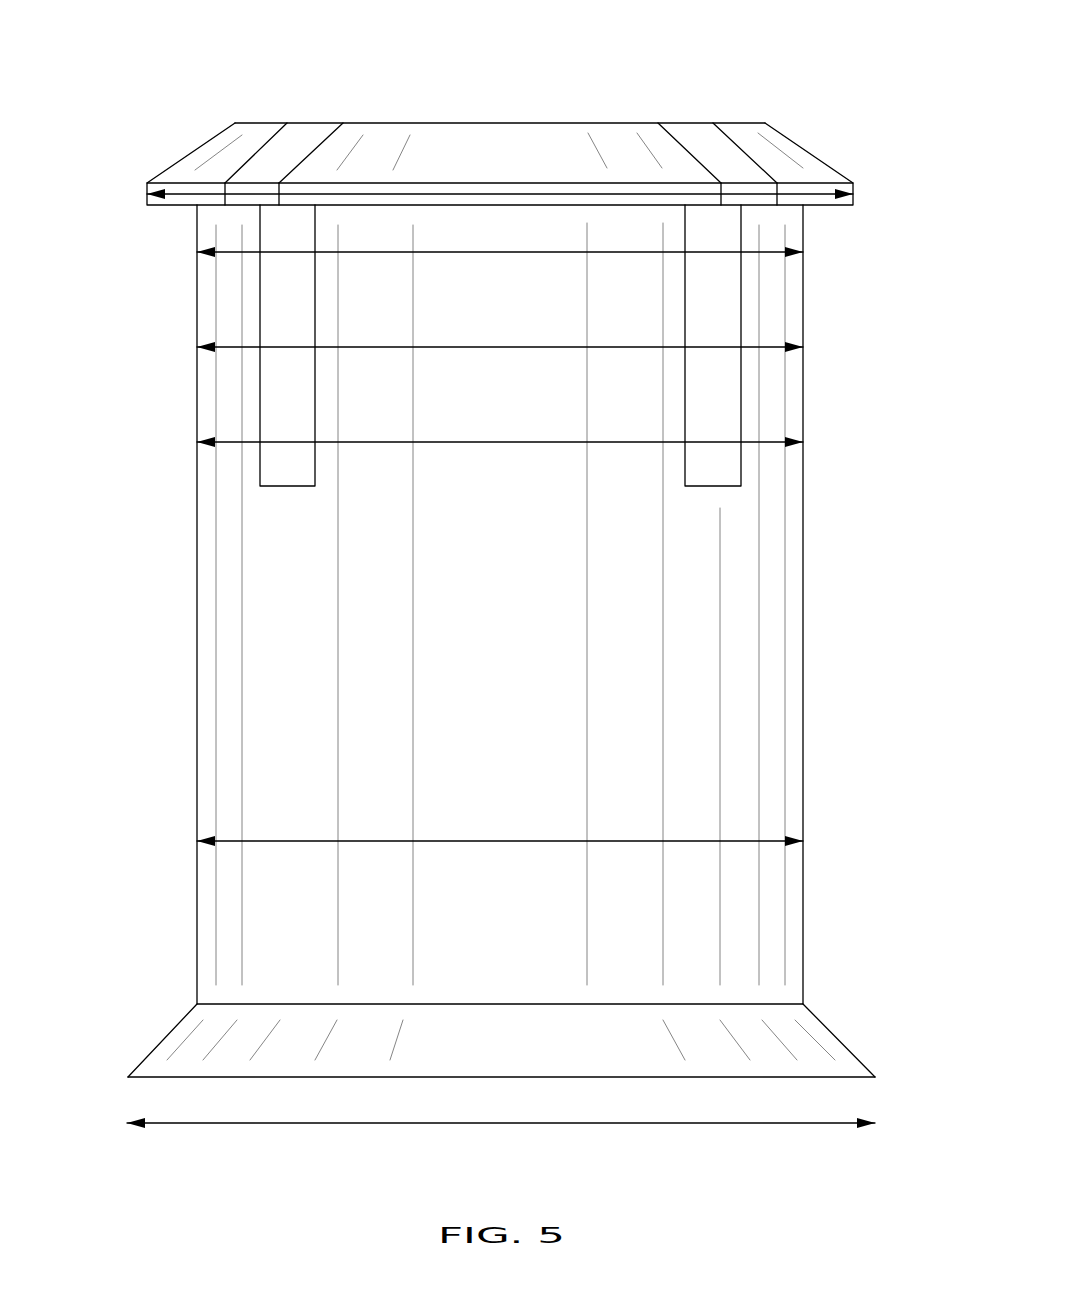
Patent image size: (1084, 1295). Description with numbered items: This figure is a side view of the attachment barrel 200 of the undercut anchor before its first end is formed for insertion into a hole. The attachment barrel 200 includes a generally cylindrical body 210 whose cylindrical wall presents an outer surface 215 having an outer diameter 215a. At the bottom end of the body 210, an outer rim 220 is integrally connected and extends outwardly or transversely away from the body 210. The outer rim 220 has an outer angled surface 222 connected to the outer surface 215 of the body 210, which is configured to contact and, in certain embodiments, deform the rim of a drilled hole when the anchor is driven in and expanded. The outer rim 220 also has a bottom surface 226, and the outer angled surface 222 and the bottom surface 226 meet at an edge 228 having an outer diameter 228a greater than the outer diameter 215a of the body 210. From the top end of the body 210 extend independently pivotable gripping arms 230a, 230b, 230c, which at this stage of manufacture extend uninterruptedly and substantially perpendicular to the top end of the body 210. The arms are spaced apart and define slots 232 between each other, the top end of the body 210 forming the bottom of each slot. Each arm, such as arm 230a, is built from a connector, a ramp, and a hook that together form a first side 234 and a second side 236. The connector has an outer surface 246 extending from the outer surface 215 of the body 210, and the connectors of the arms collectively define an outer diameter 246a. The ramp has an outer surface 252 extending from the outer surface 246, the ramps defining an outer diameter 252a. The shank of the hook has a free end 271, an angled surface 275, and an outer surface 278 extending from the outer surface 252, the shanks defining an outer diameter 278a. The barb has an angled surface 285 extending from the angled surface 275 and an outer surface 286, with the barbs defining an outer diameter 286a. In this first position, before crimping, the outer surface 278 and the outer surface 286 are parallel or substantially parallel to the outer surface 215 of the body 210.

The attachment barrel 200 is at (273, 57).
The body 210 is at (167, 702).
The outer surface 215 is at (693, 707).
The outer diameter 215a is at (772, 841).
The outer rim 220 is at (148, 1024).
The outer angled surface 222 is at (763, 1043).
The bottom surface 226 is at (787, 1077).
The edge 228 is at (128, 1077).
The outer diameter 228a is at (708, 1124).
The pivotable gripping arm 230a is at (782, 272).
The pivotable gripping arm 230b is at (558, 236).
The pivotable gripping arm 230c is at (227, 367).
The slots 232 is at (283, 420).
The first side 234 is at (315, 275).
The second side 236 is at (686, 299).
The outer surface 246 is at (493, 468).
The outer diameter 246a is at (772, 442).
The outer surface 252 is at (483, 383).
The outer diameter 252a is at (772, 347).
The free end 271 is at (533, 123).
The angled surface 275 is at (472, 150).
The outer surface 278 is at (495, 297).
The outer diameter 278a is at (772, 252).
The angled surface 285 is at (382, 158).
The outer surface 286 is at (388, 198).
The outer diameter 286a is at (810, 190).